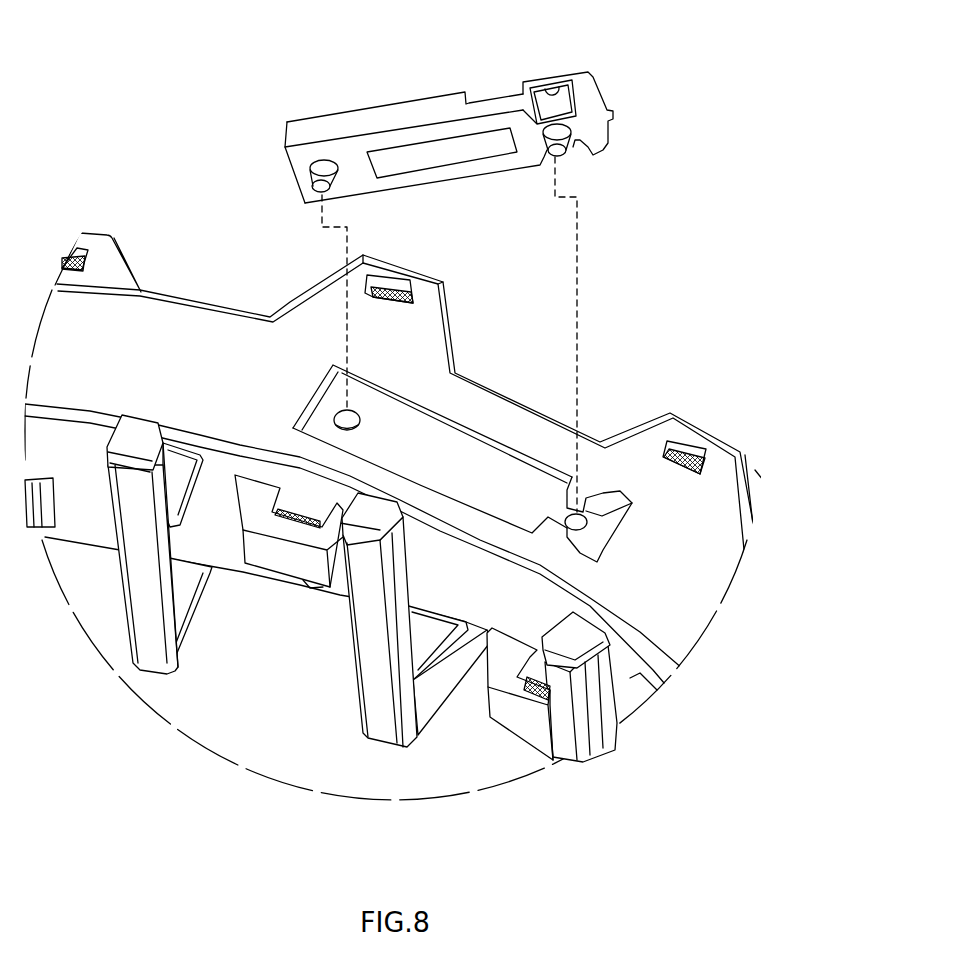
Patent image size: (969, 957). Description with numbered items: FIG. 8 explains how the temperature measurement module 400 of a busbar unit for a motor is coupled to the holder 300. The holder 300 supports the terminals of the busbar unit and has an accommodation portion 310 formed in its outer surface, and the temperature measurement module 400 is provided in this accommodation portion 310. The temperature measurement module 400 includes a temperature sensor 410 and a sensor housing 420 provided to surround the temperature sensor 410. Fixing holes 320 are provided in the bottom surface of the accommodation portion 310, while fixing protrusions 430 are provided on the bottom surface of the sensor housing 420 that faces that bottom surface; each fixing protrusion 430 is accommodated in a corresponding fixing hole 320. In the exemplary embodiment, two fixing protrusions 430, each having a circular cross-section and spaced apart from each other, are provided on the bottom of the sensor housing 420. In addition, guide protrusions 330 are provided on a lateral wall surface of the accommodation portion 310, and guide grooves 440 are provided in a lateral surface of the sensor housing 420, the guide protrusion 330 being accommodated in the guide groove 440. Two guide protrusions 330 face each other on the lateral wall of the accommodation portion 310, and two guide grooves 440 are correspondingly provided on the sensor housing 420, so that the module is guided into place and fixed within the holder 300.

The holder 300 is at (412, 497).
The accommodation portion 310 is at (472, 463).
The fixing hole 320 is at (348, 418).
The guide protrusion 330 is at (565, 528).
The temperature measurement module 400 is at (433, 257).
The temperature sensor 410 is at (448, 150).
The sensor housing 420 is at (382, 117).
The fixing protrusion 430 is at (322, 172).
The guide groove 440 is at (562, 100).